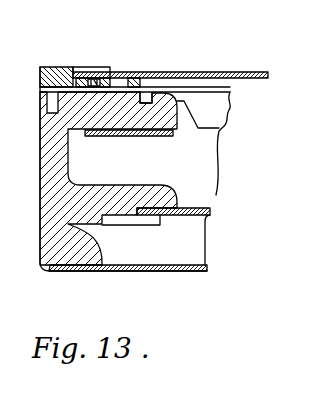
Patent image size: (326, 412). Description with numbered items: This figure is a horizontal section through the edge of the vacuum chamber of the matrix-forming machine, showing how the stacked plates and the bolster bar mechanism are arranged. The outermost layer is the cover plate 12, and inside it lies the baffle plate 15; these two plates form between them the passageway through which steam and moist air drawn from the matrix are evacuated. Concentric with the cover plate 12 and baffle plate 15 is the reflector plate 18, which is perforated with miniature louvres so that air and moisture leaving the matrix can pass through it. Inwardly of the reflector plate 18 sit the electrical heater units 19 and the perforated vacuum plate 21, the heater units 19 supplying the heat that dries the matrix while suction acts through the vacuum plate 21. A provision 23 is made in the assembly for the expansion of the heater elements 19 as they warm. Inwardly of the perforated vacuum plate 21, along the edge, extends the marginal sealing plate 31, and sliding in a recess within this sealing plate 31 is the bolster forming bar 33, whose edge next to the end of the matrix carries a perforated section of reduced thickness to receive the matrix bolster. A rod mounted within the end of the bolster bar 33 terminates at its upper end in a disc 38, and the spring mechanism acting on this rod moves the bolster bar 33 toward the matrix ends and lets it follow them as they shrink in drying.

The cover plate 12 is at (166, 272).
The baffle plate 15 is at (207, 222).
The reflector plate 18 is at (115, 137).
The electrical heater unit 19 is at (225, 106).
The perforated vacuum plate 21 is at (217, 73).
The expansion provision 23 is at (147, 97).
The marginal sealing plate 31 is at (63, 66).
The bolster forming bar 33 is at (145, 97).
The disc 38 is at (98, 77).